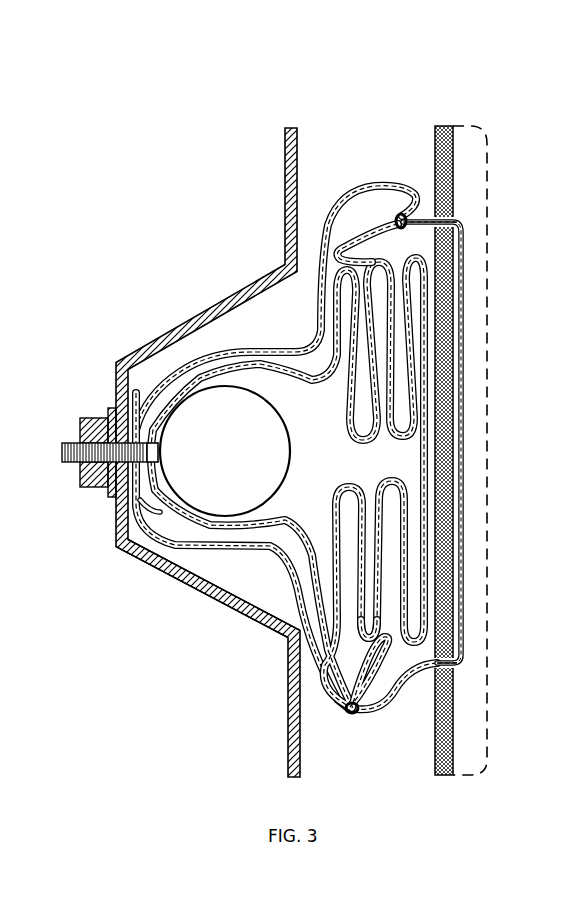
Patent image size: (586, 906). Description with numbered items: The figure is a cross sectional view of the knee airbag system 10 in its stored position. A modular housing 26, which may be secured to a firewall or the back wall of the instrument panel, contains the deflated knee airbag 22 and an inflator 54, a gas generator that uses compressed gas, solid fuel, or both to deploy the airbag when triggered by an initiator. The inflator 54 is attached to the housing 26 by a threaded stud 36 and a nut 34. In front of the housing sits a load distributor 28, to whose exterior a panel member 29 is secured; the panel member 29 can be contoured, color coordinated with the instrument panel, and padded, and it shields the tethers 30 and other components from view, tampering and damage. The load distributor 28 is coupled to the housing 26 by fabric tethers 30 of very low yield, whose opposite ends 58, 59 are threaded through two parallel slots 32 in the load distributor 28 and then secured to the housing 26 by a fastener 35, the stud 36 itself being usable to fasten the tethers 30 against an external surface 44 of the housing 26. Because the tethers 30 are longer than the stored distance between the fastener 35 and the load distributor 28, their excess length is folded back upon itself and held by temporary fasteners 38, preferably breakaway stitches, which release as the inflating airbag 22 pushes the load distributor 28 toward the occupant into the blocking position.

The knee airbag system 10 is at (487, 404).
The knee airbag 22 is at (364, 640).
The modular housing 26 is at (288, 713).
The load distributor 28 is at (455, 748).
The panel member 29 is at (487, 372).
The tethers 30 is at (363, 187).
The slots 32 is at (455, 220).
The nut 34 is at (93, 418).
The fastener 35 is at (74, 420).
The threaded stud 36 is at (65, 463).
The temporary fasteners 38 is at (392, 182).
The external surface 44 is at (192, 590).
The inflator 54 is at (234, 459).
The tether end 58 is at (134, 393).
The tether end 59 is at (158, 510).